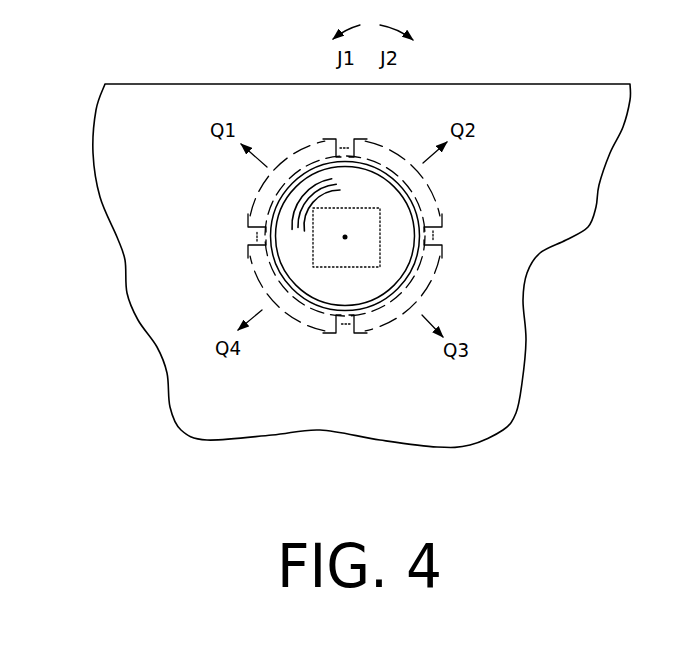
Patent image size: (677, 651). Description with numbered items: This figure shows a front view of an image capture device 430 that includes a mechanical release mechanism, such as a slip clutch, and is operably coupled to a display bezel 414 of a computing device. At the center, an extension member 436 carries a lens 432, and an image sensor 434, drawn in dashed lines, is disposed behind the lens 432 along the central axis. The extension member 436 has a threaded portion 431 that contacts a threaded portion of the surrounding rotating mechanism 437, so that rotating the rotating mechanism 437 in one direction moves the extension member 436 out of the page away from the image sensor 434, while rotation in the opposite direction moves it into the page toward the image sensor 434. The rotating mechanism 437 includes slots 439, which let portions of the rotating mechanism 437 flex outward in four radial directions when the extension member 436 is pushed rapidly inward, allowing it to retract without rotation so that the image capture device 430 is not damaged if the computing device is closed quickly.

The display bezel 414 is at (190, 317).
The image capture device 430 is at (290, 127).
The threaded portion 431 is at (345, 329).
The lens 432 is at (393, 222).
The image sensor 434 is at (358, 205).
The extension member 436 is at (270, 233).
The rotating mechanism 437 is at (424, 277).
The slots 439 is at (443, 235).